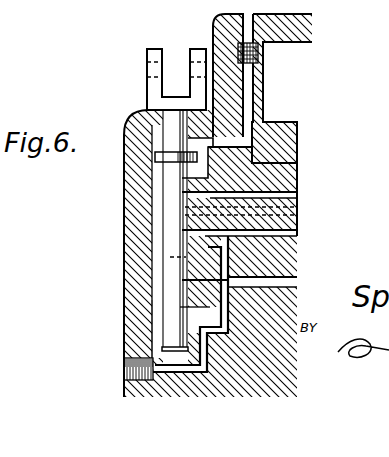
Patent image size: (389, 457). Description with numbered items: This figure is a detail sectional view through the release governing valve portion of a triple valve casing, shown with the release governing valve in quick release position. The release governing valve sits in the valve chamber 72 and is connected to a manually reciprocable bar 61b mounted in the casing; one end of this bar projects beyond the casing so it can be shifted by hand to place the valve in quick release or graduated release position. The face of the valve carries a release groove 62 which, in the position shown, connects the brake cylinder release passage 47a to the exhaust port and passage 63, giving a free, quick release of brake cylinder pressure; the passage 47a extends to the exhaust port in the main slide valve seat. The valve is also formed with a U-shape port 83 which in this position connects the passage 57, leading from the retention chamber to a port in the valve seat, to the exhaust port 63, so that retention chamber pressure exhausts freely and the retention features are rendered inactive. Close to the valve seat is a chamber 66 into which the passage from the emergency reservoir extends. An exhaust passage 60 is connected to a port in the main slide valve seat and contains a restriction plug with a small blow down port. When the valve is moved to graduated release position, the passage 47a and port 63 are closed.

The exhaust passage 60 is at (257, 163).
The manually reciprocable bar 61b is at (168, 177).
The release groove 62 is at (170, 237).
The U-shape port 83 is at (170, 257).
The valve chamber 72 is at (157, 290).
The brake cylinder release passage 47a is at (297, 235).
The passage 57 is at (297, 207).
The chamber 66 is at (258, 283).
The exhaust port and passage 63 is at (223, 305).